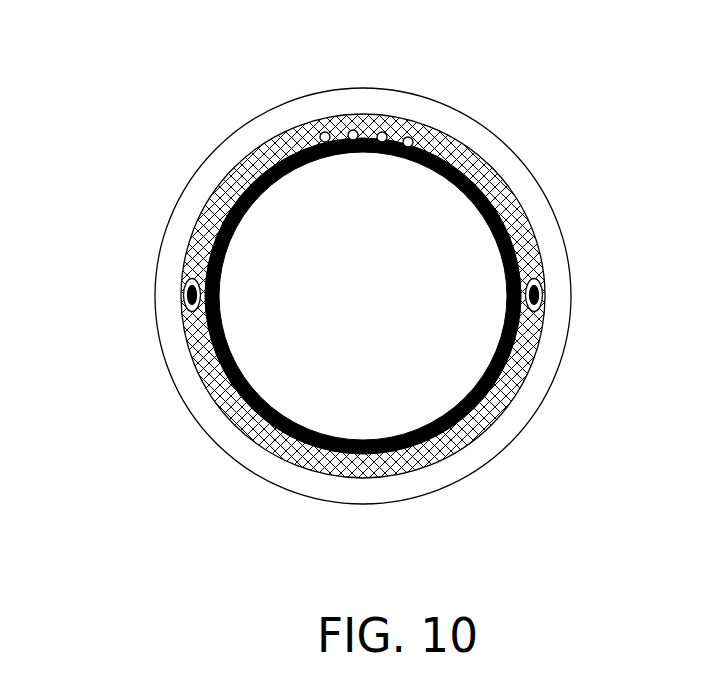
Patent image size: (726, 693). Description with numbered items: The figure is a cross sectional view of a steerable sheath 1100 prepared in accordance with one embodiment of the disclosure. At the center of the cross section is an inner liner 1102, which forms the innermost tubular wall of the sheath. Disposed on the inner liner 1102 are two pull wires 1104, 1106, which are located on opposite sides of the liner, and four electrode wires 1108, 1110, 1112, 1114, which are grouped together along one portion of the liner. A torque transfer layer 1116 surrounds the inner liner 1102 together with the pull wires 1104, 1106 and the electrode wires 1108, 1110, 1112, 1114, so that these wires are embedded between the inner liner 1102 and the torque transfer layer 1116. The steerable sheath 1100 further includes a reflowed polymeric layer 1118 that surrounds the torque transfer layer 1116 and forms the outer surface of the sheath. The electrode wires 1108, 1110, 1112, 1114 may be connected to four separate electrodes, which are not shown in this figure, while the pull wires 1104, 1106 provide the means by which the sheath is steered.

The steerable sheath 1100 is at (146, 105).
The inner liner 1102 is at (252, 165).
The pull wire 1104 is at (542, 293).
The pull wire 1106 is at (184, 295).
The electrode wire 1108 is at (325, 132).
The electrode wire 1110 is at (353, 130).
The electrode wire 1112 is at (383, 132).
The electrode wire 1114 is at (409, 137).
The torque transfer layer 1116 is at (495, 423).
The reflowed polymeric layer 1118 is at (524, 168).